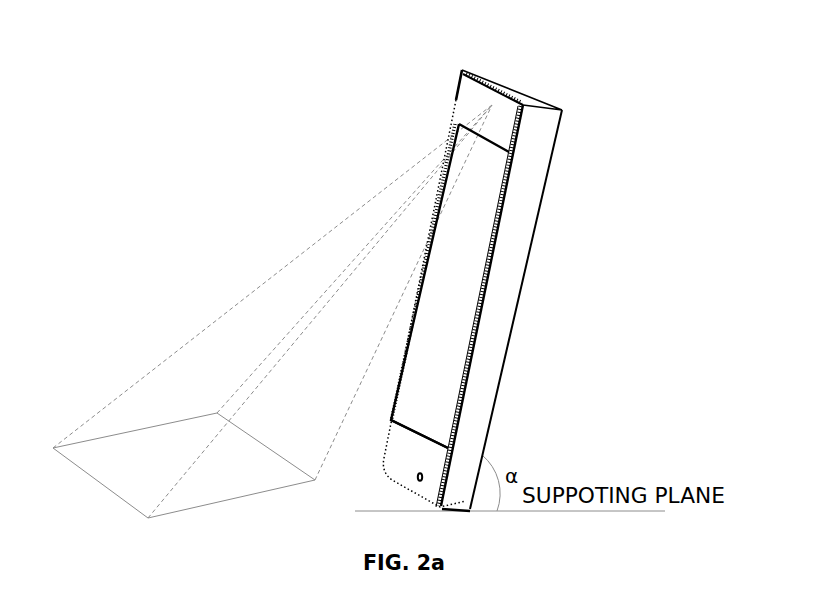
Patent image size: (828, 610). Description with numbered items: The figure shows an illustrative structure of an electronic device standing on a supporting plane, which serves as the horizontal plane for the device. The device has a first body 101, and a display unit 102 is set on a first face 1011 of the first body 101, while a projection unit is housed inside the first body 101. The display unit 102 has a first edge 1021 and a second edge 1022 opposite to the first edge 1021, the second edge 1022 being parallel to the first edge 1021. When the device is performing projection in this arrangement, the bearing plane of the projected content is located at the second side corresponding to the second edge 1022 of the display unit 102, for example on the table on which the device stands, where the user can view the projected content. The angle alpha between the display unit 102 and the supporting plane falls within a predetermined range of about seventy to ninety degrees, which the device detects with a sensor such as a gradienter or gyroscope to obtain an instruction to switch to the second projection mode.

The first body 101 is at (488, 350).
The display unit 102 is at (468, 222).
The first edge 1021 is at (500, 143).
The second edge 1022 is at (428, 437).
The first face 1011 is at (435, 465).